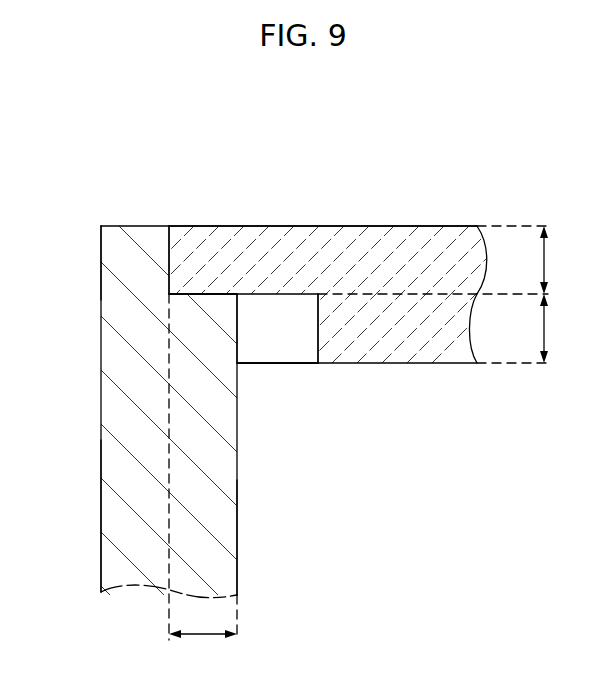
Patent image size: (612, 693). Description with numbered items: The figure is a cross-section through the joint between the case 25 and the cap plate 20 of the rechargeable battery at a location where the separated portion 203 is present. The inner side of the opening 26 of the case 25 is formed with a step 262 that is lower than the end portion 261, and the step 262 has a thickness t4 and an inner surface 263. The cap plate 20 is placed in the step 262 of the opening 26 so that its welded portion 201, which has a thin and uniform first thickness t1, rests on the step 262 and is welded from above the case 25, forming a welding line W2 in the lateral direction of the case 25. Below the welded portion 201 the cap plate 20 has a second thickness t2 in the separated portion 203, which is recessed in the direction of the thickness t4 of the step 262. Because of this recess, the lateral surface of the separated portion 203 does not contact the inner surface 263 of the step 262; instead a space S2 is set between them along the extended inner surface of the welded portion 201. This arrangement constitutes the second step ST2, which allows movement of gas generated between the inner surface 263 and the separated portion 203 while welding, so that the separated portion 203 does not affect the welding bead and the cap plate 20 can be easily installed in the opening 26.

The cap plate 20 is at (437, 255).
The welded portion 201 is at (193, 262).
The separated portion 203 is at (316, 333).
The case 25 is at (91, 515).
The opening 26 is at (180, 243).
The end portion 261 is at (105, 226).
The step 262 is at (201, 294).
The inner surface 263 is at (237, 537).
The space S2 is at (277, 344).
The second step ST2 is at (306, 300).
The welding line W2 is at (168, 214).
The first thickness t1 is at (557, 260).
The second thickness t2 is at (557, 328).
The thickness t4 is at (203, 478).